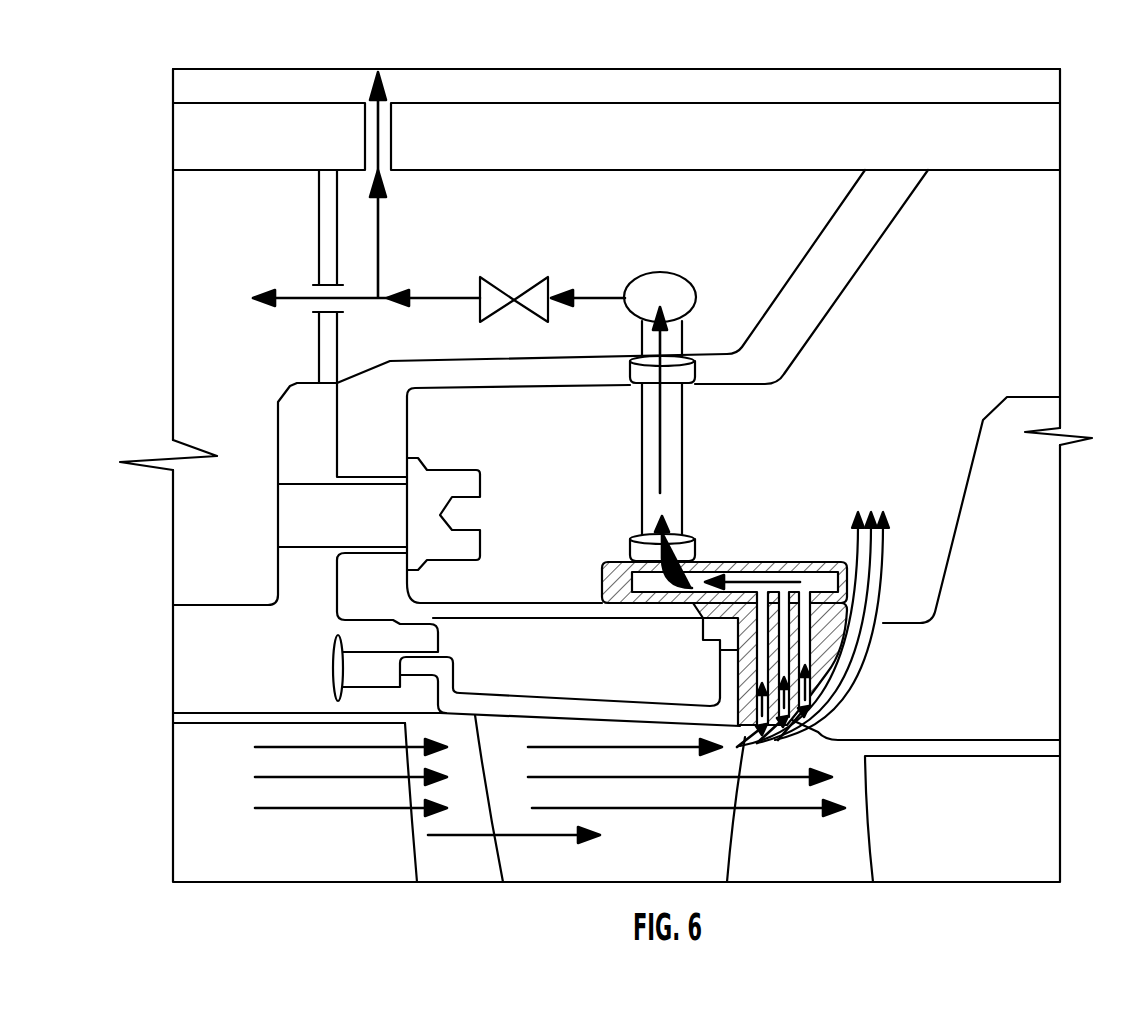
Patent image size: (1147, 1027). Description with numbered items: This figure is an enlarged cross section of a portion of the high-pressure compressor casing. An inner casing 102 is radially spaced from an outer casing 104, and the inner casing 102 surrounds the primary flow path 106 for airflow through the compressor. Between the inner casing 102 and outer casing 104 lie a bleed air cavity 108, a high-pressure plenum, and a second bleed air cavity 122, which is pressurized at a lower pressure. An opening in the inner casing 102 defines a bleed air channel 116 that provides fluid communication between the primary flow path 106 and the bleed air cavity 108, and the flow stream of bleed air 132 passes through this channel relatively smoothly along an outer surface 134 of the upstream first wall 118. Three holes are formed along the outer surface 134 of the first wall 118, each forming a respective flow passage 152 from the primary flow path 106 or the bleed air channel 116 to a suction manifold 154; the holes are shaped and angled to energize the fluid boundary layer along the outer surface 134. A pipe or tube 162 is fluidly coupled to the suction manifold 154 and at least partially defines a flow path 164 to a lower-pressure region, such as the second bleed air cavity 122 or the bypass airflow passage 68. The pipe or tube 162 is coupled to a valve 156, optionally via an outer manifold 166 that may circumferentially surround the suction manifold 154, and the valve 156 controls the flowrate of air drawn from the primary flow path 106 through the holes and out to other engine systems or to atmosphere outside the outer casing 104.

The bypass airflow passage 68 is at (605, 52).
The inner casing 102 is at (1027, 627).
The outer casing 104 is at (677, 148).
The primary flow path 106 is at (472, 835).
The bleed air cavity 108 is at (955, 336).
The bleed air channel 116 is at (866, 663).
The first wall 118 is at (852, 623).
The second bleed air cavity 122 is at (255, 377).
The bleed air 132 is at (387, 100).
The outer surface 134 is at (745, 737).
The flow passage 152 is at (760, 661).
The suction manifold 154 is at (740, 578).
The valve 156 is at (497, 287).
The pipe or tube 162 is at (690, 424).
The flow path 164 is at (650, 418).
The outer manifold 166 is at (706, 285).